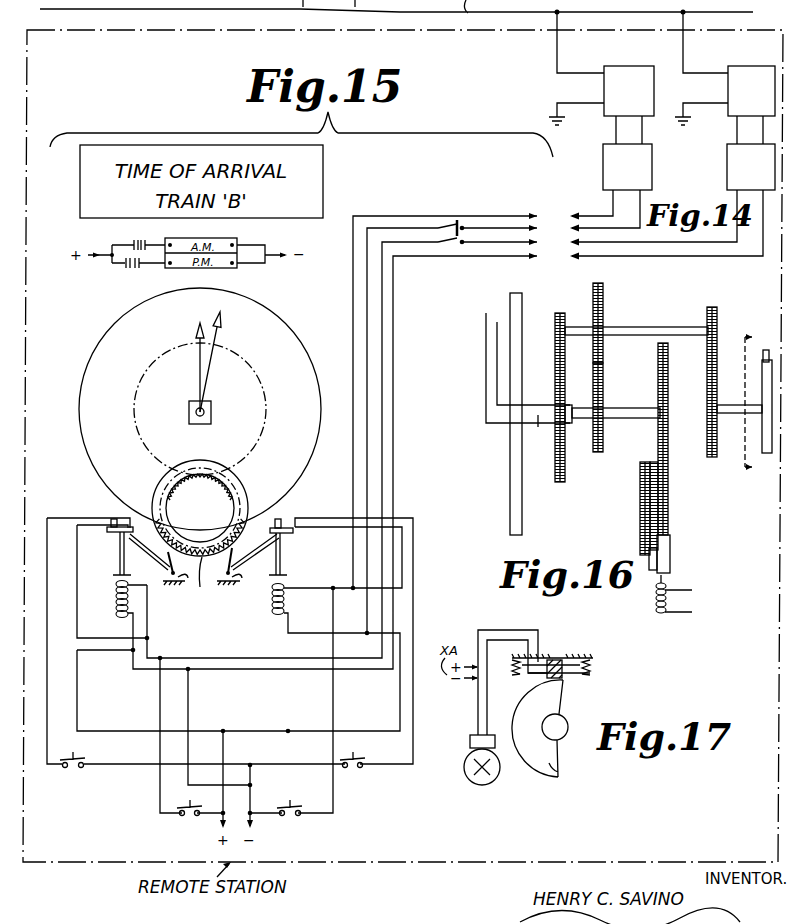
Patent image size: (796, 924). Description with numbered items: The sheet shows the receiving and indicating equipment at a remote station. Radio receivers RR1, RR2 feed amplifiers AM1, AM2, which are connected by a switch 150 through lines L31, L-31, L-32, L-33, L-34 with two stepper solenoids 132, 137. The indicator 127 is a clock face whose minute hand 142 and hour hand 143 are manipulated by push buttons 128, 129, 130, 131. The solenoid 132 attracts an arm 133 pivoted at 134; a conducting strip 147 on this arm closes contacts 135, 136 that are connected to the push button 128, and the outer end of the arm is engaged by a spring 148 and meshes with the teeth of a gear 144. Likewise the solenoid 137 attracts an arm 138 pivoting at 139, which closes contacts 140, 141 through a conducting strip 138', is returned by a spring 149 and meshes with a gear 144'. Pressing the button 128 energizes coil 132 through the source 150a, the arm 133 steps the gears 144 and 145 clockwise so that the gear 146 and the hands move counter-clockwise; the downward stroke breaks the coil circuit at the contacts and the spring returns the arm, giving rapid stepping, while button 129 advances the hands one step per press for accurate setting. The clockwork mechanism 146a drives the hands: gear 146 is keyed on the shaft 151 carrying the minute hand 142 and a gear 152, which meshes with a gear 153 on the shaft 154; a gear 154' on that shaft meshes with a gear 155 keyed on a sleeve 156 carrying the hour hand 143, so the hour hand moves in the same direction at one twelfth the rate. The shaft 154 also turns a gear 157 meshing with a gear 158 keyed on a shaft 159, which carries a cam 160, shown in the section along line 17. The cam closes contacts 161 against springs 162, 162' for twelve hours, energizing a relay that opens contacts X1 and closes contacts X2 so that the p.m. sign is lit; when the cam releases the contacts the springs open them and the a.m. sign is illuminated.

In FIG. 16, the indicator 127 is at (523, 317).
In FIG. 15, the indicator 127 is at (283, 330).
In FIG. 15, the push button 128 is at (76, 754).
In FIG. 15, the push button 129 is at (183, 806).
In FIG. 15, the push button 130 is at (356, 754).
In FIG. 15, the push button 131 is at (305, 789).
In FIG. 15, the solenoid 132 is at (116, 596).
In FIG. 15, the arm 133 is at (119, 557).
In FIG. 15, the pivot 134 is at (155, 552).
In FIG. 15, the contact 135 is at (117, 523).
In FIG. 15, the contact 136 is at (127, 523).
In FIG. 16, the solenoid 137 is at (656, 600).
In FIG. 15, the solenoid 137 is at (285, 598).
In FIG. 16, the arm 138 is at (678, 554).
In FIG. 15, the arm 138 is at (297, 554).
In FIG. 15, the conducting strip 138' is at (318, 501).
In FIG. 15, the pivot 139 is at (247, 550).
In FIG. 15, the contact 140 is at (281, 523).
In FIG. 15, the contact 141 is at (297, 532).
In FIG. 16, the minute hand 142 is at (485, 345).
In FIG. 15, the minute hand 142 is at (212, 366).
In FIG. 16, the hour hand 143 is at (496, 372).
In FIG. 15, the hour hand 143 is at (197, 372).
In FIG. 16, the gear 144 is at (625, 508).
In FIG. 15, the gear 144 is at (200, 514).
In FIG. 15, the gear 144' is at (207, 584).
In FIG. 16, the gear 145 is at (662, 510).
In FIG. 15, the gear 145 is at (176, 479).
In FIG. 16, the gear 146 is at (668, 440).
In FIG. 15, the gear 146 is at (232, 478).
In FIG. 15, the clockwork mechanism 146a is at (212, 412).
In FIG. 15, the conducting strip 147 is at (110, 532).
In FIG. 15, the spring 148 is at (188, 577).
In FIG. 15, the spring 149 is at (236, 575).
In FIG. 15, the switch 150 is at (443, 228).
In FIG. 15, the source 150a is at (240, 830).
In FIG. 16, the shaft 151 is at (488, 416).
In FIG. 16, the gear 152 is at (601, 388).
In FIG. 16, the gear 153 is at (601, 340).
In FIG. 16, the shaft 154 is at (636, 314).
In FIG. 16, the gear 154' is at (543, 332).
In FIG. 16, the gear 155 is at (559, 378).
In FIG. 16, the sleeve 156 is at (538, 427).
In FIG. 16, the gear 157 is at (712, 307).
In FIG. 16, the gear 158 is at (706, 379).
In FIG. 16, the shaft 159 is at (730, 405).
In FIG. 17, the shaft 159 is at (560, 720).
In FIG. 16, the cam 160 is at (762, 440).
In FIG. 17, the cam 160 is at (552, 764).
In FIG. 16, the contacts 161 is at (762, 354).
In FIG. 17, the contacts 161 is at (568, 658).
In FIG. 17, the spring 162 is at (507, 678).
In FIG. 17, the spring 162' is at (605, 669).
In FIG. 16, the section line 17 is at (762, 403).
In FIG. 14, the radio receiver RR1 is at (636, 72).
In FIG. 14, the radio receiver RR2 is at (752, 72).
In FIG. 14, the amplifier AM1 is at (645, 156).
In FIG. 14, the amplifier AM2 is at (730, 172).
In FIG. 15, the line L-31 is at (519, 214).
In FIG. 14, the line L-32 is at (576, 217).
In FIG. 15, the line L-32 is at (477, 227).
In FIG. 14, the line L-33 is at (662, 258).
In FIG. 15, the line L-33 is at (491, 258).
In FIG. 15, the line L-34 is at (418, 258).
In FIG. 14, the line L31 is at (593, 216).
In FIG. 15, the contacts X1 is at (147, 237).
In FIG. 15, the contacts X2 is at (145, 272).